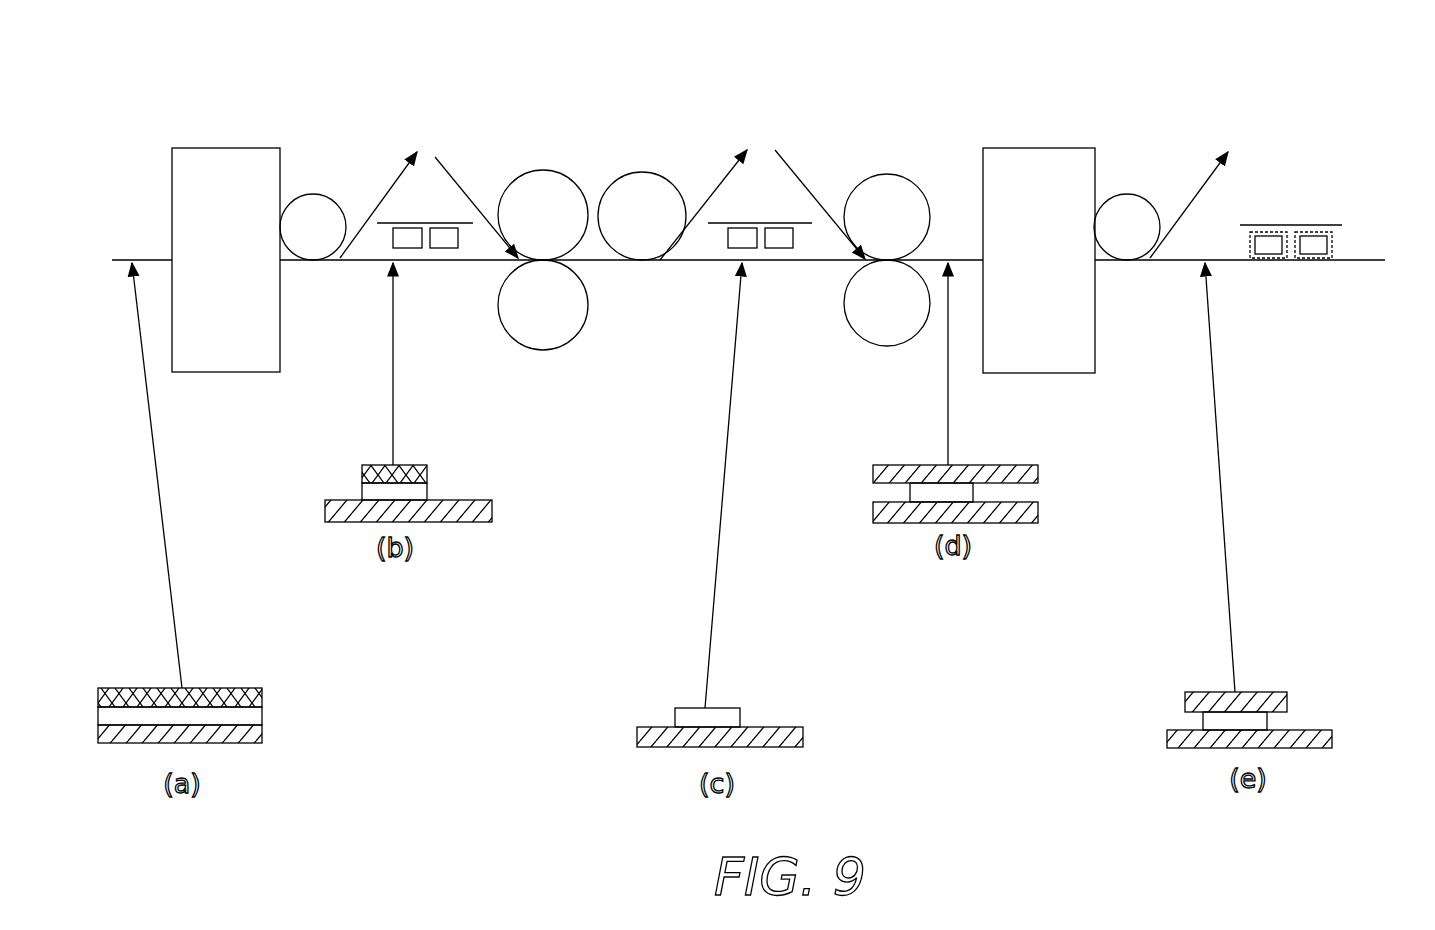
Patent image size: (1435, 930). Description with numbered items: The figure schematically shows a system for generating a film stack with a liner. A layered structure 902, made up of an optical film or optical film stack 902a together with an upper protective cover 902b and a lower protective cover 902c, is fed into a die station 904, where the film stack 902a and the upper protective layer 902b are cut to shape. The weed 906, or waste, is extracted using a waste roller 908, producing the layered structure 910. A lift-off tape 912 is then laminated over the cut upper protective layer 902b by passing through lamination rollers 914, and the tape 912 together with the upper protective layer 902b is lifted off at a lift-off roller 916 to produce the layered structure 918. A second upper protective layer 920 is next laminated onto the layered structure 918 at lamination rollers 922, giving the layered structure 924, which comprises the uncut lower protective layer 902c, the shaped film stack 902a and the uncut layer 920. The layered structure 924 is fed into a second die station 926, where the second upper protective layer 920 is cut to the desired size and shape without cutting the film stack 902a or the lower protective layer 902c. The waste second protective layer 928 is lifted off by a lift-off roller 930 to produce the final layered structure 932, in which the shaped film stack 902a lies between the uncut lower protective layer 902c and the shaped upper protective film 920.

The layered structure 902 is at (137, 257).
The optical film or optical film stack 902a is at (263, 716).
The upper protective cover 902b is at (262, 697).
The lower protective cover 902c is at (262, 735).
The die station 904 is at (213, 148).
The weed 906 is at (395, 168).
The waste roller 908 is at (314, 194).
The layered structure 910 is at (348, 263).
The lift-off tape 912 is at (455, 175).
The lamination rollers 914 is at (543, 170).
The lift-off roller 916 is at (638, 172).
The layered structure 918 is at (683, 263).
The second upper protective layer 920 is at (790, 163).
The lamination rollers 922 is at (887, 175).
The layered structure 924 is at (965, 259).
The second die station 926 is at (1033, 148).
The waste second protective layer 928 is at (1202, 178).
The lift-off roller 930 is at (1128, 195).
The layered structure 932 is at (1240, 264).